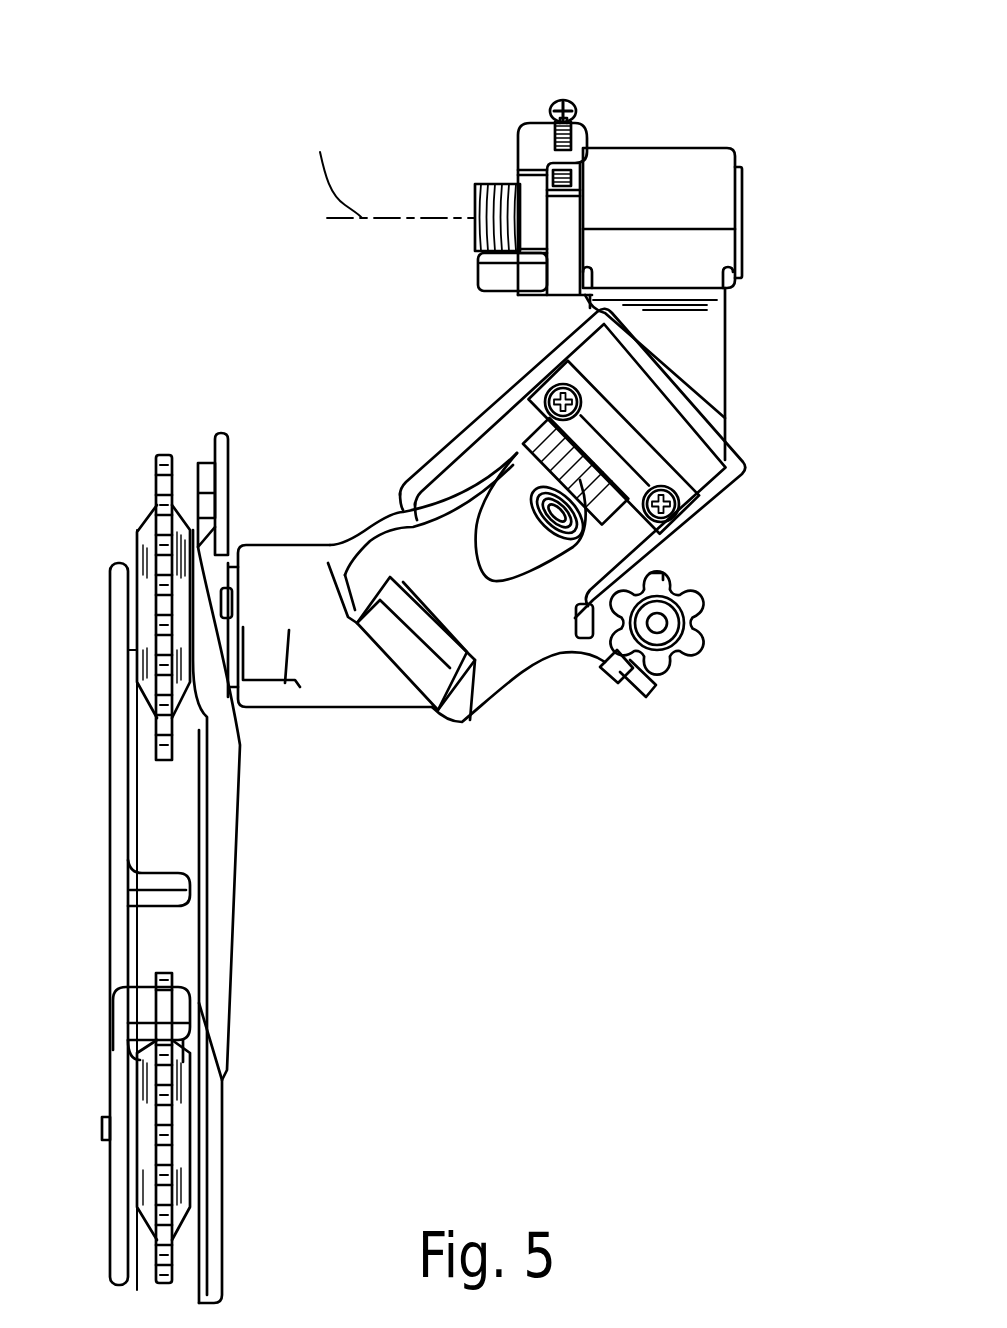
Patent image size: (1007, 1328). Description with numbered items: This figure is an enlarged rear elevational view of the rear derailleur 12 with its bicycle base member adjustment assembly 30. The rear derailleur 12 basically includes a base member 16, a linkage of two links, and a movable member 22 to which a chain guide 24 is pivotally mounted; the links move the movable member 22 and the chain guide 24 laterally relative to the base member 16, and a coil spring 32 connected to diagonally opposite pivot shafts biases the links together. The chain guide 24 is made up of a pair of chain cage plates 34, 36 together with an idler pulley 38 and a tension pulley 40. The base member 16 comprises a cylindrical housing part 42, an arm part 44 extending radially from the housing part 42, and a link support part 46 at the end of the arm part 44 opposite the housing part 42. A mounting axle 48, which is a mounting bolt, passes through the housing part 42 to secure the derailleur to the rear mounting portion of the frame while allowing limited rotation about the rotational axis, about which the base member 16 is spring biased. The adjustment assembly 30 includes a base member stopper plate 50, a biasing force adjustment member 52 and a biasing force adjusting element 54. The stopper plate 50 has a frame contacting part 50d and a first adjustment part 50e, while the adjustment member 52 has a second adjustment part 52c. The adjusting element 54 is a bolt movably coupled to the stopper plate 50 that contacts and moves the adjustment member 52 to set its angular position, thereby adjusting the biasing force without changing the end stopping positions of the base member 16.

The rear derailleur 12 is at (350, 426).
The base member 16 is at (761, 138).
The movable member 22 is at (318, 716).
The chain guide 24 is at (272, 928).
The bicycle base member adjustment assembly 30 is at (471, 74).
The coil spring 32 is at (519, 456).
The chain cage plate 34 is at (217, 993).
The chain cage plate 36 is at (108, 906).
The idler pulley 38 is at (150, 508).
The tension pulley 40 is at (172, 1152).
The cylindrical housing part 42 is at (695, 140).
The arm part 44 is at (740, 351).
The link support part 46 is at (724, 521).
The mounting axle 48 is at (744, 190).
The base member stopper plate 50 is at (510, 149).
The frame contacting part 50d is at (505, 278).
The first adjustment part 50e is at (578, 136).
The biasing force adjustment member 52 is at (530, 228).
The second adjustment part 52c is at (573, 186).
The biasing force adjusting element 54 is at (553, 90).